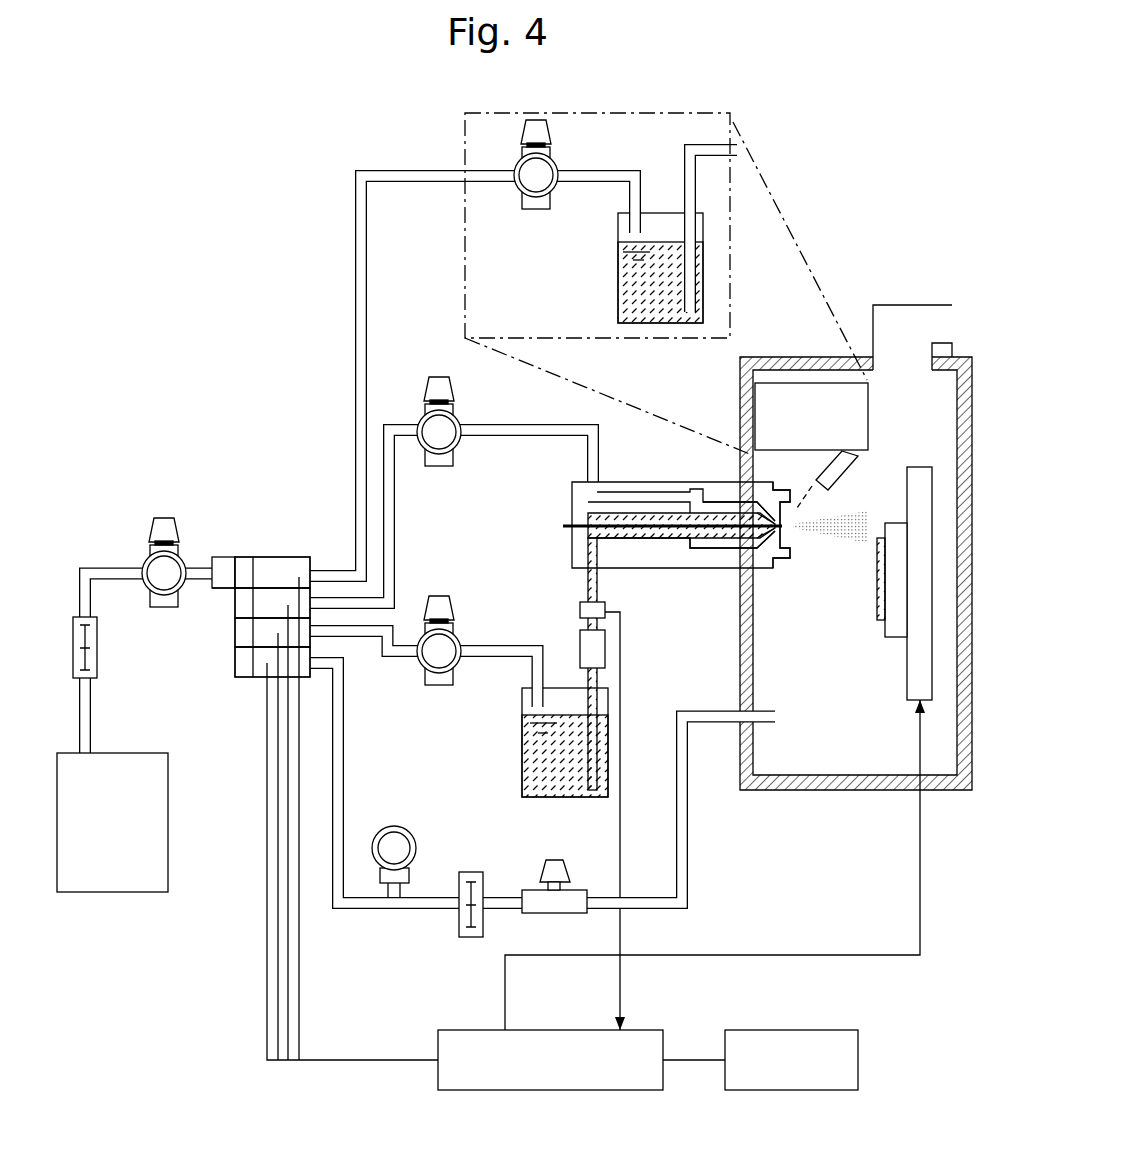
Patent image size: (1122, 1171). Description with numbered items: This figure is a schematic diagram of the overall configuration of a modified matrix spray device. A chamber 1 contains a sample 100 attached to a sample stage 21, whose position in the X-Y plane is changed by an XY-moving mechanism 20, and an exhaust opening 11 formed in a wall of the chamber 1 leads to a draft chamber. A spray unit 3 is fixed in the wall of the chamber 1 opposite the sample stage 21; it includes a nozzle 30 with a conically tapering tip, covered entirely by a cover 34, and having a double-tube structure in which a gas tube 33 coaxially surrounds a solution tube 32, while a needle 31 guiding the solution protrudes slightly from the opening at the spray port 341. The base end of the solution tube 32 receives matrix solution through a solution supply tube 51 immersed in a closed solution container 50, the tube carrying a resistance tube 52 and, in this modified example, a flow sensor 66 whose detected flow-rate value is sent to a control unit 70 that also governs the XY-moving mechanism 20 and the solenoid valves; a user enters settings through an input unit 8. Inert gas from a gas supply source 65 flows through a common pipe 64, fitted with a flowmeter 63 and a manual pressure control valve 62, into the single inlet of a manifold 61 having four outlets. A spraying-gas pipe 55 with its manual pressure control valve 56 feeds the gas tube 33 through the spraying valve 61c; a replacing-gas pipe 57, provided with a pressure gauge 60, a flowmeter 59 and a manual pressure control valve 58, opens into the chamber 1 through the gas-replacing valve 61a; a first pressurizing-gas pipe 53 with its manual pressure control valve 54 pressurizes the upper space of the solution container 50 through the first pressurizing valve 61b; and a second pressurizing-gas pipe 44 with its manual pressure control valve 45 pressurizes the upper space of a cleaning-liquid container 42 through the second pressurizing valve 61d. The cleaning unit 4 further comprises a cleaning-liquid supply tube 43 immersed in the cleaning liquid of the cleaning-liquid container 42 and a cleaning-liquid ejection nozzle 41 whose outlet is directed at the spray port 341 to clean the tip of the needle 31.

The chamber 1 is at (845, 792).
The spray unit 3 is at (715, 543).
The cleaning unit 4 is at (736, 133).
The input unit 8 is at (830, 1090).
The exhaust opening 11 is at (903, 354).
The XY-moving mechanism 20 is at (925, 467).
The sample stage 21 is at (893, 640).
The nozzle 30 is at (762, 547).
The needle 31 is at (642, 530).
The solution tube 32 is at (640, 514).
The gas tube 33 is at (712, 547).
The cover 34 is at (683, 482).
The cleaning-liquid ejection nozzle 41 is at (852, 466).
The cleaning-liquid container 42 is at (618, 310).
The cleaning-liquid supply tube 43 is at (685, 165).
The second pressurizing-gas pipe 44 is at (592, 168).
The manual pressure control valve 45 is at (528, 211).
The solution container 50 is at (521, 785).
The solution supply tube 51 is at (587, 589).
The resistance tube 52 is at (579, 640).
The first pressurizing-gas pipe 53 is at (366, 640).
The manual pressure control valve 54 is at (434, 686).
The spraying-gas pipe 55 is at (492, 425).
The manual pressure control valve 56 is at (453, 457).
The replacing-gas pipe 57 is at (344, 756).
The manual pressure control valve 58 is at (576, 890).
The flowmeter 59 is at (471, 872).
The pressure gauge 60 is at (398, 828).
The manifold 61 is at (311, 790).
The gas-replacing valve 61a is at (262, 672).
The first pressurizing valve 61b is at (262, 636).
The spraying valve 61c is at (262, 607).
The second pressurizing valve 61d is at (262, 565).
The manual pressure control valve 62 is at (150, 528).
The flowmeter 63 is at (98, 654).
The common pipe 64 is at (92, 731).
The gas supply source 65 is at (88, 892).
The flow sensor 66 is at (579, 612).
The control unit 70 is at (632, 1090).
The sample 100 is at (876, 622).
The spray port 341 is at (782, 530).